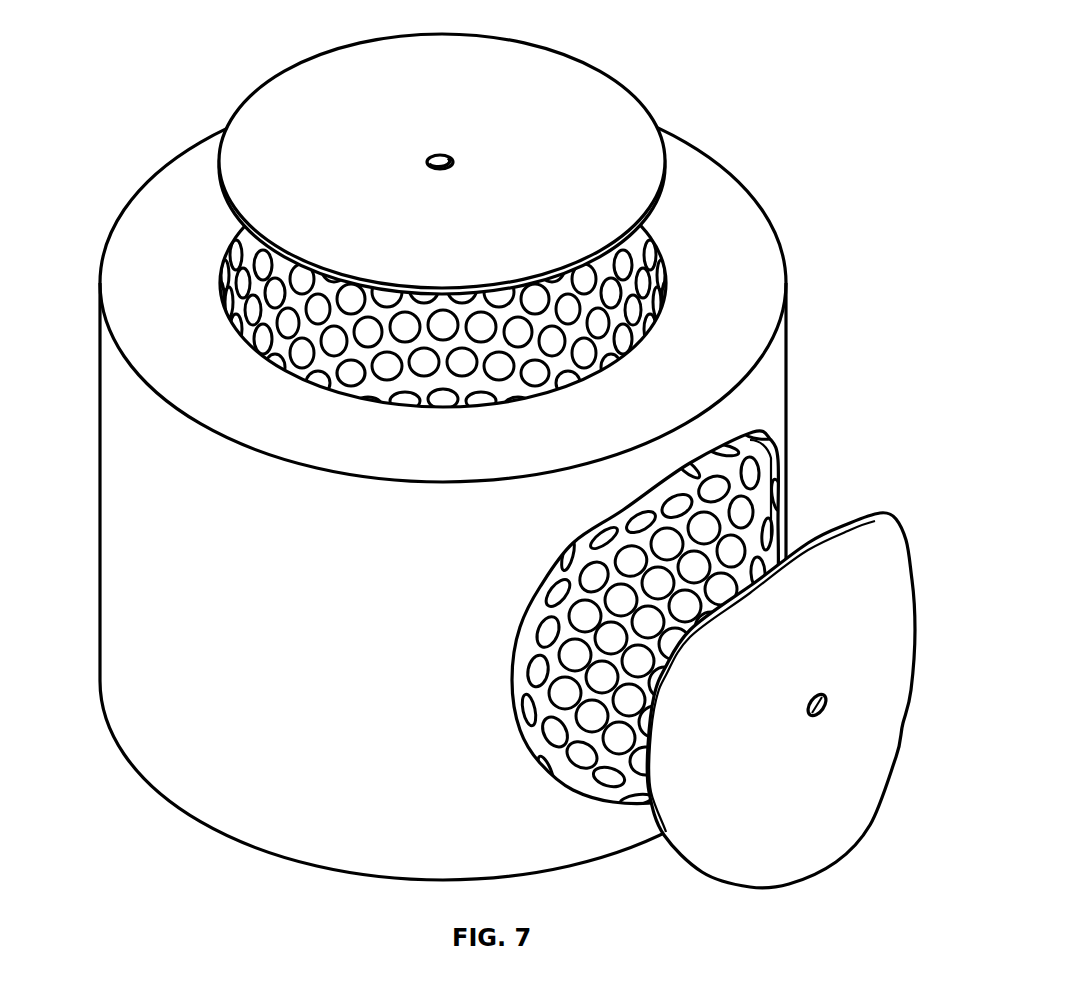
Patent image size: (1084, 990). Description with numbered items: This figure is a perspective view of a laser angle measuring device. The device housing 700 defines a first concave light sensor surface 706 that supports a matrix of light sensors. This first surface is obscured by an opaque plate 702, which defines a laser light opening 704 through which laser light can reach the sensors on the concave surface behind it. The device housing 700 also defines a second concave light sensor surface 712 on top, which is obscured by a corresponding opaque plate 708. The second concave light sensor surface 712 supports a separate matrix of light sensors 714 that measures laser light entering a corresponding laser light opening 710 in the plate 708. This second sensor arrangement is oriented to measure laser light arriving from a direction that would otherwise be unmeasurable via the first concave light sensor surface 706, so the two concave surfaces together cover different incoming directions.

The device housing 700 is at (118, 285).
The opaque plate 702 is at (885, 555).
The laser light opening 704 is at (830, 703).
The first concave light sensor surface 706 is at (486, 603).
The corresponding opaque plate 708 is at (573, 80).
The corresponding laser light opening 710 is at (456, 162).
The second concave light sensor surface 712 is at (483, 302).
The matrix of light sensors 714 is at (338, 386).